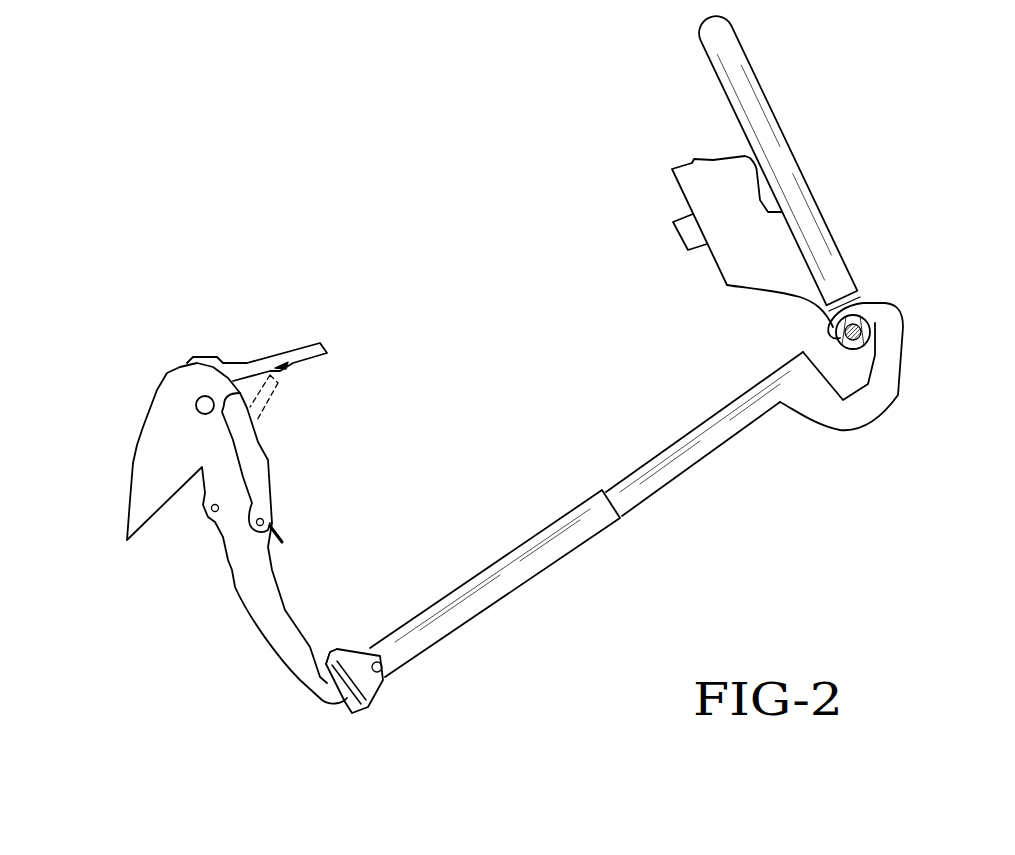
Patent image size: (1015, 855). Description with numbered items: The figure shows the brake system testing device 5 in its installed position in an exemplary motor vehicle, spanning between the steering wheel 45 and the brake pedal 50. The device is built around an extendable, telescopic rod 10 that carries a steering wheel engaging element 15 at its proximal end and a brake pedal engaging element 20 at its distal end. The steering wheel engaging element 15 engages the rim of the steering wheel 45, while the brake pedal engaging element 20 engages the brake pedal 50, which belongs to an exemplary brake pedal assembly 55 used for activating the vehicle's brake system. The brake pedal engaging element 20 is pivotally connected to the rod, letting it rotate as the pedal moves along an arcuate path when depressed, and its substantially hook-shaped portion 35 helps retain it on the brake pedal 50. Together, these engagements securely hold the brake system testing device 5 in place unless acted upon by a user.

The brake system testing device 5 is at (517, 310).
The telescopic rod 10 is at (576, 552).
The steering wheel engaging element 15 is at (888, 323).
The brake pedal engaging element 20 is at (370, 687).
The hook-shaped portion 35 is at (328, 663).
The steering wheel 45 is at (775, 123).
The brake pedal 50 is at (343, 687).
The brake pedal assembly 55 is at (108, 402).